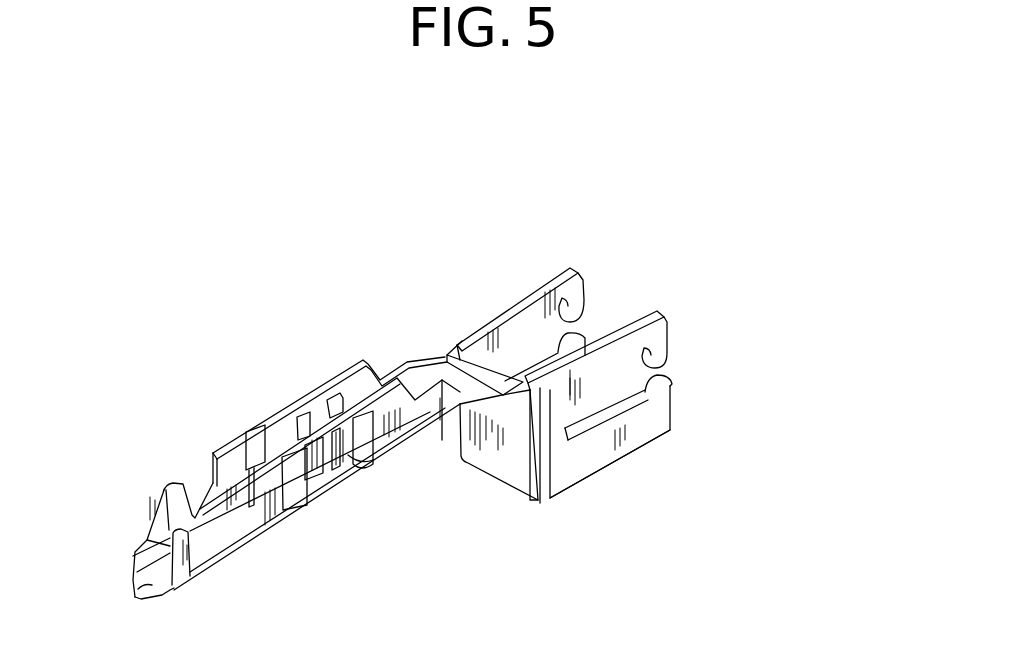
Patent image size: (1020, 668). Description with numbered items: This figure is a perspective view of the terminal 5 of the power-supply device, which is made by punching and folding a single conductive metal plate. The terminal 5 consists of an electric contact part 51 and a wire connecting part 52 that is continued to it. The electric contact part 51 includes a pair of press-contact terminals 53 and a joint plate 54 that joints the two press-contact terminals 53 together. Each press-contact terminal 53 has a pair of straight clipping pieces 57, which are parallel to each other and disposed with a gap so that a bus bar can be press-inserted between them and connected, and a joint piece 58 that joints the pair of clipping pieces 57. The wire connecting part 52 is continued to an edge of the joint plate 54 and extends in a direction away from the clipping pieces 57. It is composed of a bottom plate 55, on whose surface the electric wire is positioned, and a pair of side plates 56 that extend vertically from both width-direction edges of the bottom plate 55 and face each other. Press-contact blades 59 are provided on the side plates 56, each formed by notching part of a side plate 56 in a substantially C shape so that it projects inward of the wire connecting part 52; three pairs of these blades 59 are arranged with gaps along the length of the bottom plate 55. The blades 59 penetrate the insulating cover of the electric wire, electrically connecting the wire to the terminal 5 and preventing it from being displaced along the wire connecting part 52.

The terminal 5 is at (712, 156).
The electric contact part 51 is at (722, 495).
The wire connecting part 52 is at (328, 350).
The press-contact terminal 53 is at (617, 238).
The joint plate 54 is at (498, 450).
The bottom plate 55 is at (145, 593).
The side plate 56 is at (370, 370).
The clipping piece 57 is at (575, 330).
The joint piece 58 is at (563, 465).
The press-contact blade 59 is at (323, 393).